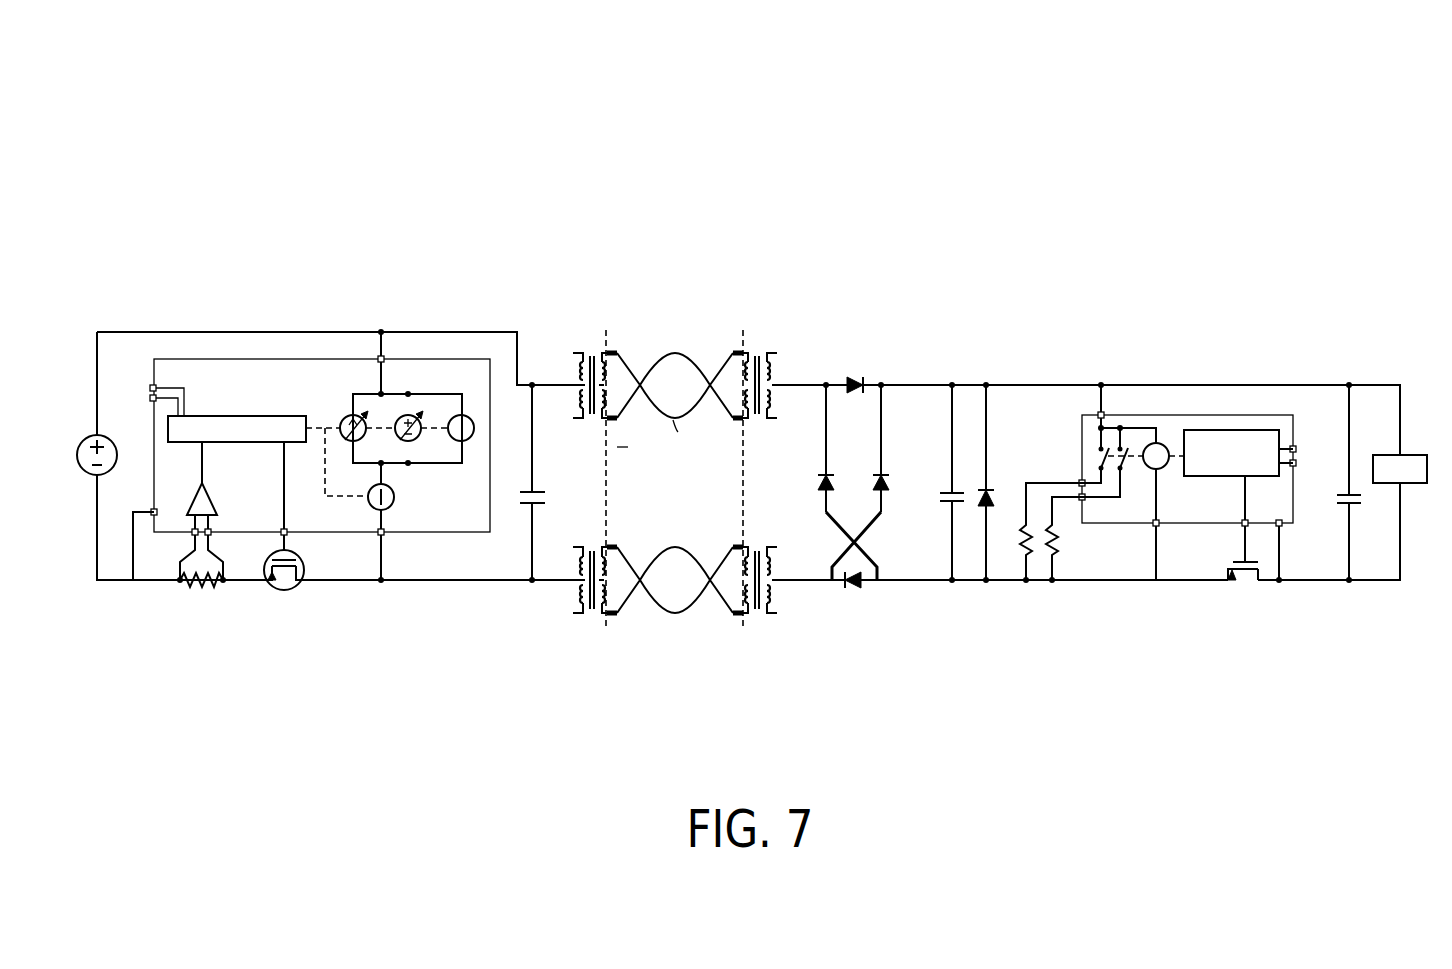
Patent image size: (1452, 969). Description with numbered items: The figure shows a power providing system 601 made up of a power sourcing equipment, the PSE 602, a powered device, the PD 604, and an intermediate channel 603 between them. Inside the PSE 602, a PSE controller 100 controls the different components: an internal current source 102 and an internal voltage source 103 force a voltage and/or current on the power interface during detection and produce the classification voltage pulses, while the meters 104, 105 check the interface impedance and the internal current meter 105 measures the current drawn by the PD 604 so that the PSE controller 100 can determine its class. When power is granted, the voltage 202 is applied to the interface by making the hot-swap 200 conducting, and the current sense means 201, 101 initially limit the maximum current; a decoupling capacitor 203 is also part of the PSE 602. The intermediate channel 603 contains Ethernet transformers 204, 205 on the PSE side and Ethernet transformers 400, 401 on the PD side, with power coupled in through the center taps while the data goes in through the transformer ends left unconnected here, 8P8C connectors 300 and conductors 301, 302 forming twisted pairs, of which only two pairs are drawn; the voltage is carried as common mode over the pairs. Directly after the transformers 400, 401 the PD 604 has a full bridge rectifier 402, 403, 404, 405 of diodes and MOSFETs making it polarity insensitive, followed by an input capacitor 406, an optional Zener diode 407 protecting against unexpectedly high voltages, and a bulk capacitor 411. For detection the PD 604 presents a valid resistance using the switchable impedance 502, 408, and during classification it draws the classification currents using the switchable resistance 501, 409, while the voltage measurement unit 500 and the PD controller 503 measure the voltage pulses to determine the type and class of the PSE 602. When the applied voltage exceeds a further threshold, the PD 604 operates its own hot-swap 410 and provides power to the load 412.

The PSE controller 100 is at (246, 416).
The current sense means 101 is at (187, 512).
The internal current source 102 is at (344, 415).
The internal voltage source 103 is at (418, 415).
The meter 104 is at (473, 415).
The internal current meter 105 is at (390, 510).
The hot-swap 200 is at (292, 590).
The current sense means 201 is at (216, 590).
The voltage 202 is at (113, 438).
The decoupling capacitor 203 is at (522, 506).
The Ethernet transformer 204 is at (576, 352).
The Ethernet transformer 205 is at (576, 547).
The 8P8C connectors 300 is at (613, 352).
The conductors 301 is at (676, 352).
The conductors 302 is at (676, 420).
The Ethernet transformer 400 is at (776, 352).
The Ethernet transformer 401 is at (765, 614).
The full bridge rectifier element 402 is at (857, 362).
The full bridge rectifier element 403 is at (821, 492).
The full bridge rectifier element 404 is at (853, 590).
The full bridge rectifier element 405 is at (890, 478).
The input capacitor 406 is at (943, 503).
The Zener diode 407 is at (980, 503).
The switchable impedance 408 is at (1022, 548).
The switchable resistance 409 is at (1058, 548).
The hot-swap 410 is at (1247, 576).
The bulk capacitor 411 is at (1345, 500).
The load 412 is at (1392, 485).
The voltage measurement unit 500 is at (1153, 441).
The switchable resistance 501 is at (1126, 470).
The switchable impedance 502 is at (1100, 455).
The PD controller 503 is at (1206, 430).
The power providing system 601 is at (1062, 148).
The PSE 602 is at (293, 300).
The intermediate channel 603 is at (655, 272).
The PD 604 is at (1070, 308).